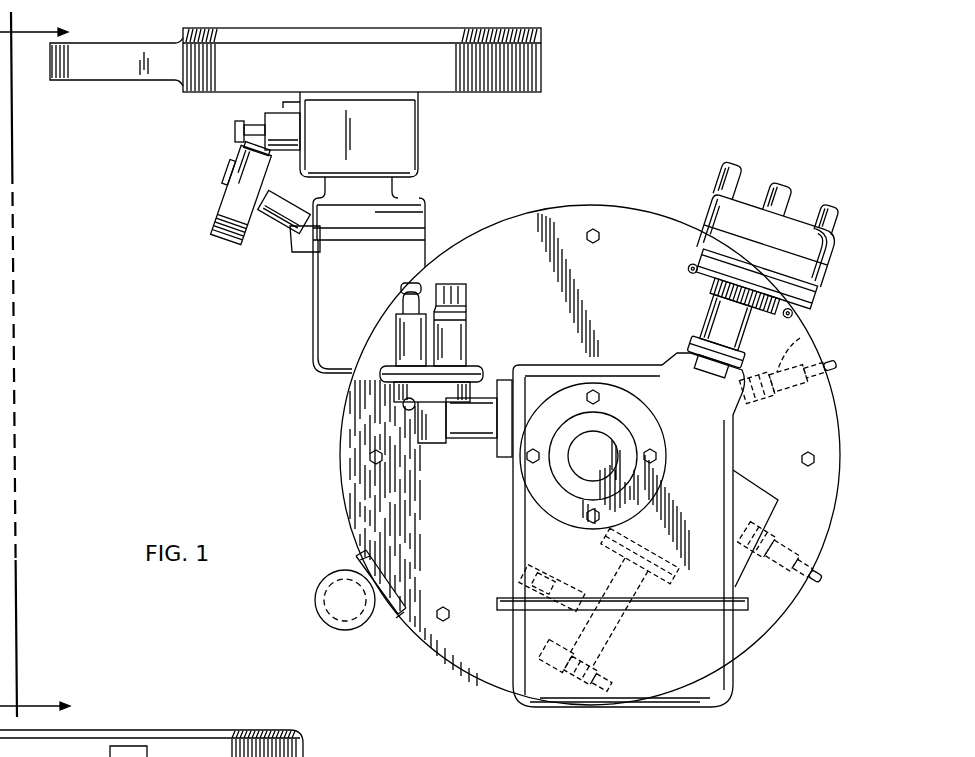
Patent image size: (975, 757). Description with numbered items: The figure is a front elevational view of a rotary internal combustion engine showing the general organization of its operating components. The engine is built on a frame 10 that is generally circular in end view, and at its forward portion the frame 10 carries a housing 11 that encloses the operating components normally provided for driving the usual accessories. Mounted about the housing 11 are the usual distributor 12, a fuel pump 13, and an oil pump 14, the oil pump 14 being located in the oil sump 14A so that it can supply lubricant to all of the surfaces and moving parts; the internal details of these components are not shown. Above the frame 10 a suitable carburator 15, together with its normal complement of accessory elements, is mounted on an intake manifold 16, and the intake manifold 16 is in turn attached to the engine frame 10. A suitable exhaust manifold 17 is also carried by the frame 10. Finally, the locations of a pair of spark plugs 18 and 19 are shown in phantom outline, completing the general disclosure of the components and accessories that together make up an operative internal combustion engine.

The frame 10 is at (606, 207).
The housing 11 is at (633, 377).
The distributor 12 is at (743, 205).
The fuel pump 13 is at (455, 372).
The oil pump 14 is at (645, 690).
The oil sump 14A is at (522, 702).
The carburator 15 is at (430, 168).
The intake manifold 16 is at (325, 295).
The exhaust manifold 17 is at (322, 622).
The spark plug 18 is at (800, 338).
The spark plug 19 is at (774, 583).